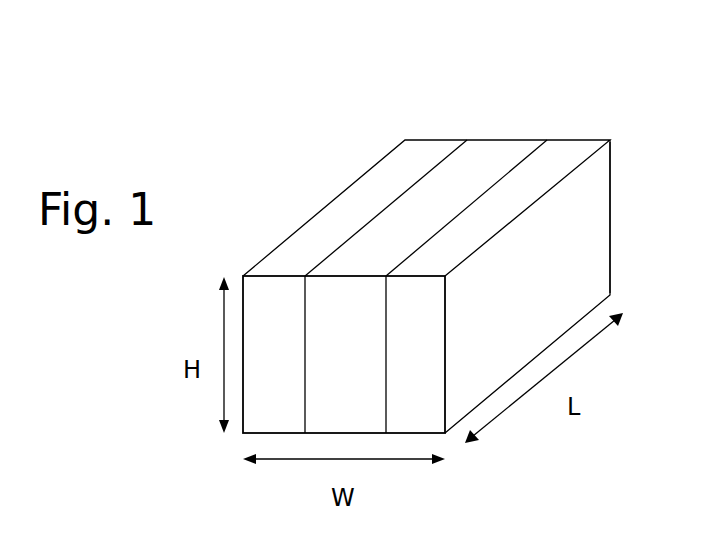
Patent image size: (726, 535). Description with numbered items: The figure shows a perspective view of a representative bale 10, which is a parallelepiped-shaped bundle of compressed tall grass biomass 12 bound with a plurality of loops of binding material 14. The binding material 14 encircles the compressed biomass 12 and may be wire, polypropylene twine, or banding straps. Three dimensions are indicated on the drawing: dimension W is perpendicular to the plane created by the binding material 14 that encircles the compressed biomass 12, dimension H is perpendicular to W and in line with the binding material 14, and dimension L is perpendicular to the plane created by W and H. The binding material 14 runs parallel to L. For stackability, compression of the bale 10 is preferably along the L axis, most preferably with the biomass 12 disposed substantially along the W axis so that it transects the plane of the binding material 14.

The bale 10 is at (296, 198).
The compressed tall grass biomass 12 is at (555, 267).
The binding material 14 is at (525, 155).